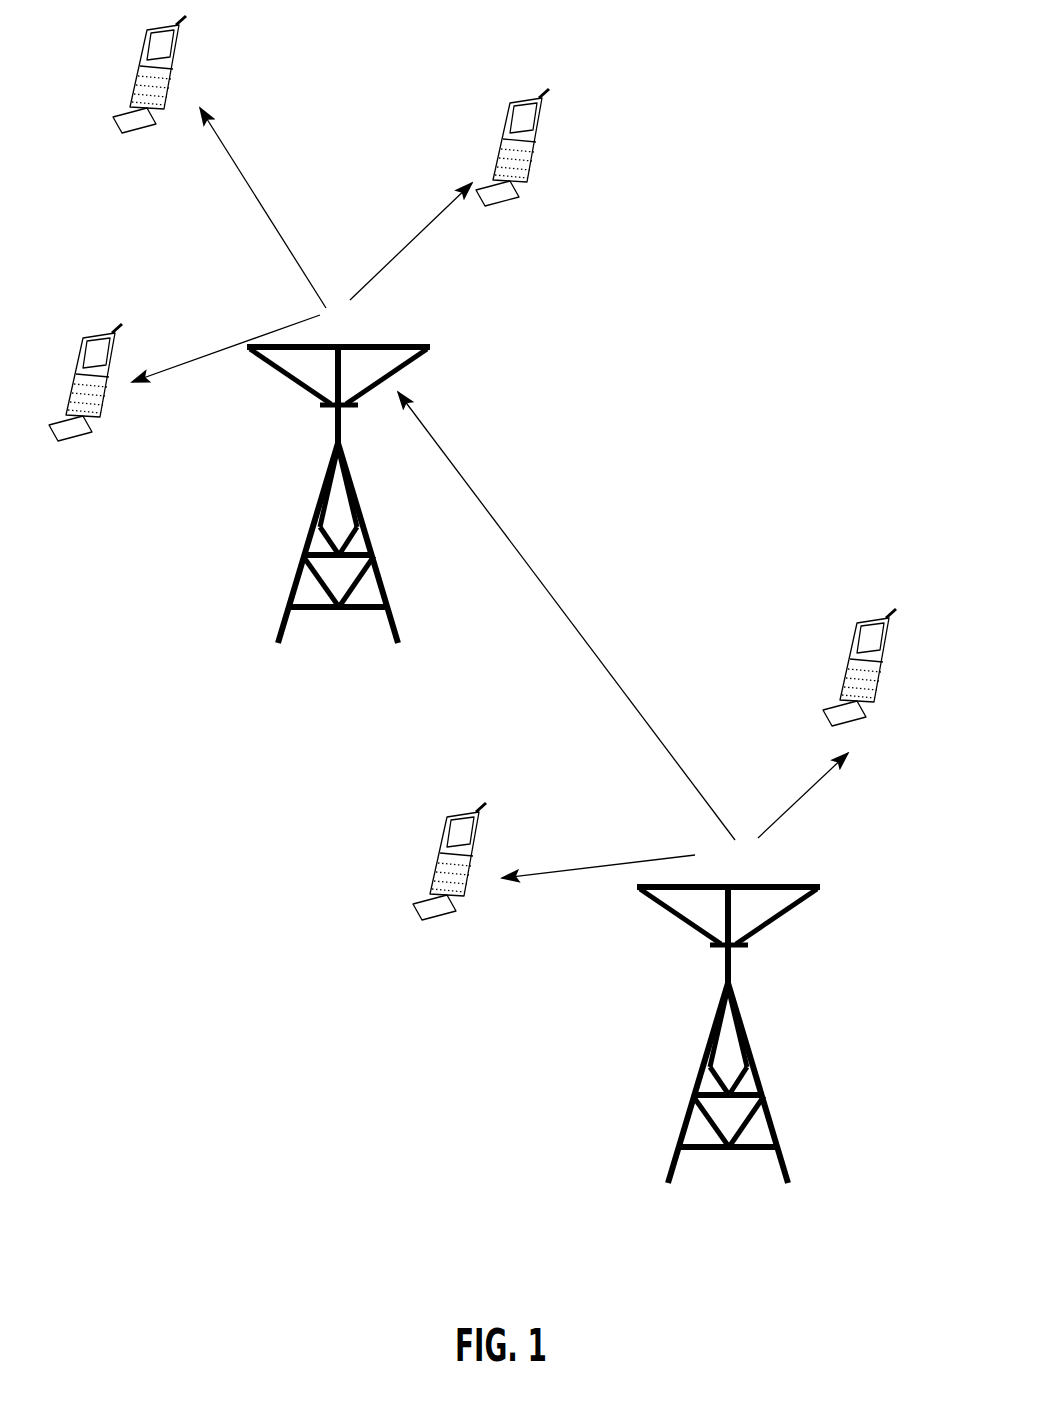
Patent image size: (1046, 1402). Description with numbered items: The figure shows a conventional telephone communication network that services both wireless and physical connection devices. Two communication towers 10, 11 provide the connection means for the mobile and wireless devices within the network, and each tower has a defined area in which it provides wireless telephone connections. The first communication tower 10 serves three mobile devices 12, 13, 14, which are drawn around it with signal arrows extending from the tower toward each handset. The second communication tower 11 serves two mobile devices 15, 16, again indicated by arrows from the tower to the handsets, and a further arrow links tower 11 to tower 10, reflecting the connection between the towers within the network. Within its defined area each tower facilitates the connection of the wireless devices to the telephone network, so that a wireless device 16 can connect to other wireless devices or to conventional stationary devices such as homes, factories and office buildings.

The communication tower 10 is at (345, 614).
The communication tower 11 is at (748, 1147).
The mobile device 12 is at (165, 110).
The mobile device 13 is at (107, 420).
The mobile device 14 is at (525, 190).
The mobile device 15 is at (868, 707).
The wireless device 16 is at (470, 887).